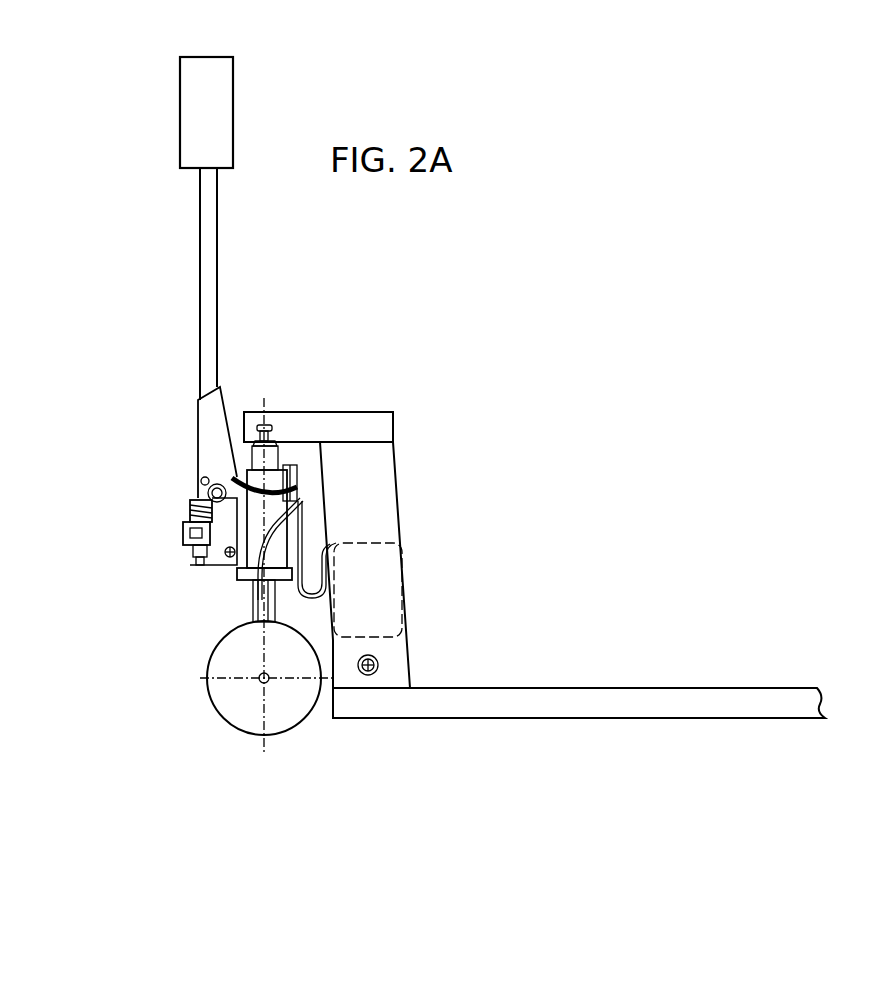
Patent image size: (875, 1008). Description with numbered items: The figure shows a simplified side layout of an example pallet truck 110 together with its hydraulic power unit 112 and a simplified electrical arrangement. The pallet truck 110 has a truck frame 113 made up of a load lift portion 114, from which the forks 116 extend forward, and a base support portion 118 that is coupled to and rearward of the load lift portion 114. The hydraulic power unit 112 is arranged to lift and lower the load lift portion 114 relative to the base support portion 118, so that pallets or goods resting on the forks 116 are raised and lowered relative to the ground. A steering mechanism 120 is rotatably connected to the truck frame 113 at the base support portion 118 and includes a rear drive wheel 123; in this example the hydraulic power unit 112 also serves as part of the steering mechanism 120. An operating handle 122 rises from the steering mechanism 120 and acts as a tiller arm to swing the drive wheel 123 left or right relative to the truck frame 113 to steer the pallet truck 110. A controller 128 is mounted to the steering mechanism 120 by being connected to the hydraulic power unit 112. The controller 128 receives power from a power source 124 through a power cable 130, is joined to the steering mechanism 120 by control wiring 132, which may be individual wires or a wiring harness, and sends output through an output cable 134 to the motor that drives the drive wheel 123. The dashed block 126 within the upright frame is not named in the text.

The pallet truck 110 is at (506, 294).
The hydraulic power unit 112 is at (180, 538).
The truck frame 113 is at (296, 378).
The load lift portion 114 is at (348, 404).
The forks 116 is at (649, 687).
The base support portion 118 is at (218, 571).
The steering mechanism 120 is at (192, 437).
The operating handle 122 is at (208, 193).
The drive wheel 123 is at (240, 712).
The power source 124 is at (412, 610).
The battery 126 is at (383, 572).
The controller 128 is at (300, 475).
The power cable 130 is at (300, 552).
The control wiring 132 is at (232, 478).
The output cable 134 is at (250, 603).